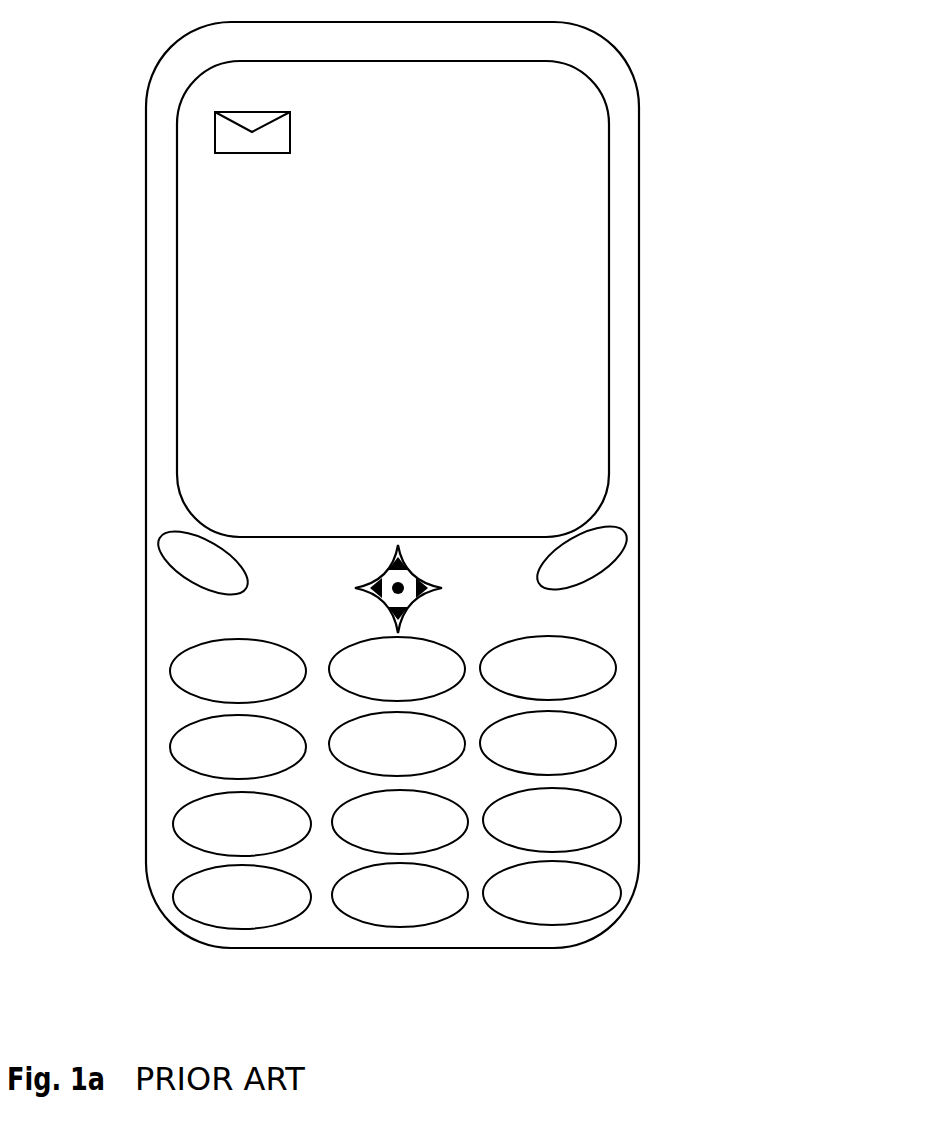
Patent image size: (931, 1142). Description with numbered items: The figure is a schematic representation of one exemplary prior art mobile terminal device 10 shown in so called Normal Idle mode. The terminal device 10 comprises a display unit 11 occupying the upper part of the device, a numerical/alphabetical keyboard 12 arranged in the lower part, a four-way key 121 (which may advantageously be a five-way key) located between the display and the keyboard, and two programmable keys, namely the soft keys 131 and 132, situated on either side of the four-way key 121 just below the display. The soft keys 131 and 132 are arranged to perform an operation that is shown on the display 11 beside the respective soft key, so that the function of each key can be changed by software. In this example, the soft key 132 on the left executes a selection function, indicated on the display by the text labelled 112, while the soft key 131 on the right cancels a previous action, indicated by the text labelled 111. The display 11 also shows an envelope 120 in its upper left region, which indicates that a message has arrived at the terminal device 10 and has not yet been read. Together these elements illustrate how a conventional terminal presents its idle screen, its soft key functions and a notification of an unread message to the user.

The terminal device 10 is at (646, 152).
The display unit 11 is at (611, 297).
The numerical/alphabetical keyboard 12 is at (176, 783).
The cancel function 111 is at (539, 487).
The selection function 112 is at (246, 491).
The envelope 120 is at (226, 131).
The four-way key 121 is at (452, 593).
The soft key 131 is at (588, 565).
The soft key 132 is at (197, 567).